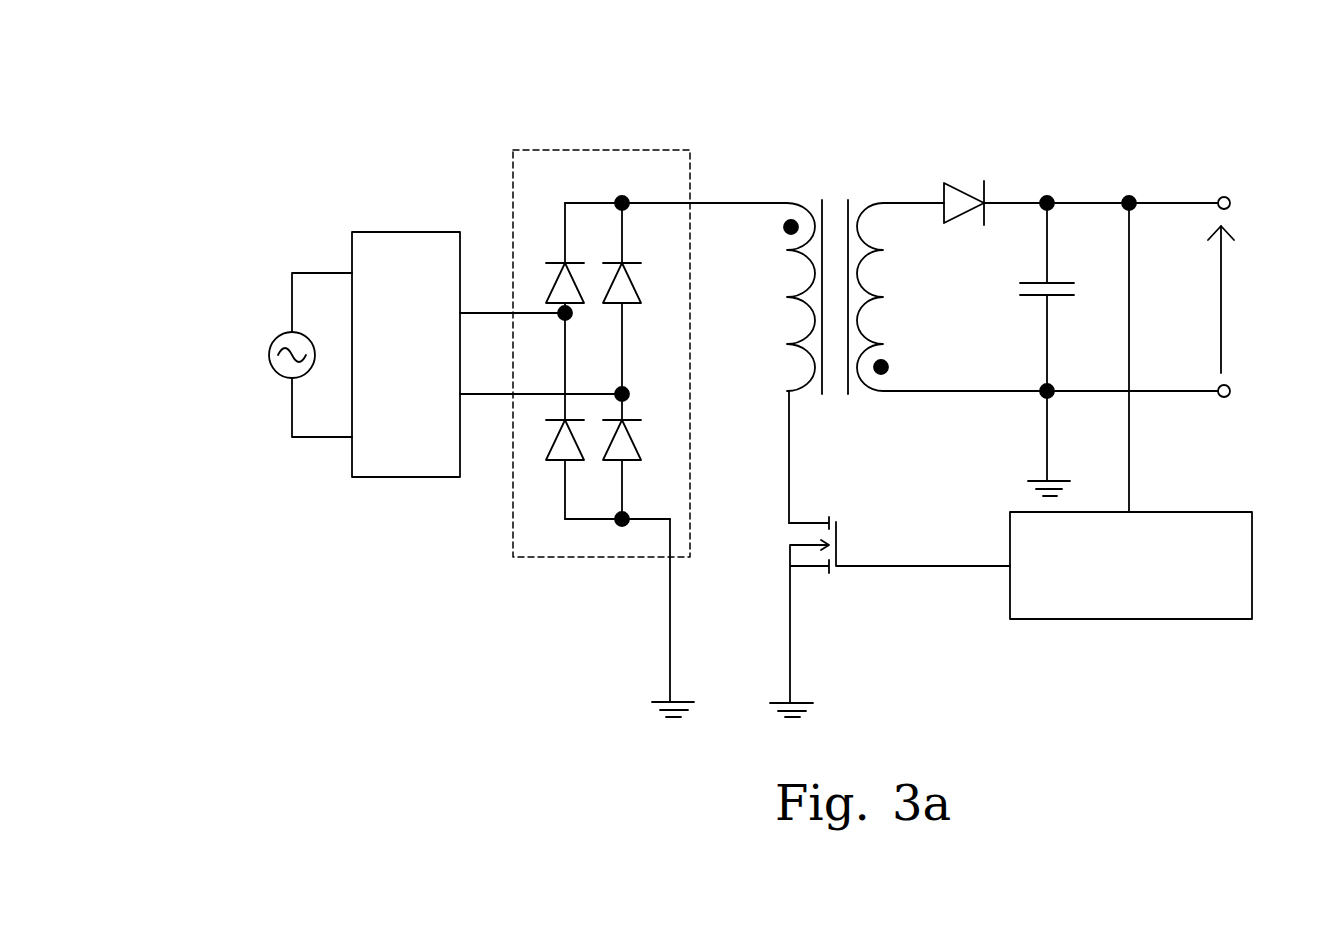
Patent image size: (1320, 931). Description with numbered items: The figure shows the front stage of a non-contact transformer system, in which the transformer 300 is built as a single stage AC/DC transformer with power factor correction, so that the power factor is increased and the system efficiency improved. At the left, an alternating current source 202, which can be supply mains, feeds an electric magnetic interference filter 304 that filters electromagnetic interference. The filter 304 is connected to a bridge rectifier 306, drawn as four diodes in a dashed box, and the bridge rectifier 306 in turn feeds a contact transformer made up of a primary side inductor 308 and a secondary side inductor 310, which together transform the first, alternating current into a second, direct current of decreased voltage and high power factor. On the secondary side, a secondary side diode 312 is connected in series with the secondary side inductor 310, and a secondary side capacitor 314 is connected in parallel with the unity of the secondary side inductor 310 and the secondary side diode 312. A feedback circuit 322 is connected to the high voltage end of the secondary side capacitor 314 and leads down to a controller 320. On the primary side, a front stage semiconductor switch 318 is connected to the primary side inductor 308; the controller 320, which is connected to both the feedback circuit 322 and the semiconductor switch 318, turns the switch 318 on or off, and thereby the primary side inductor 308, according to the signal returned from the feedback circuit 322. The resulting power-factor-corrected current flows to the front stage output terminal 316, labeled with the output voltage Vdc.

The transformer 300 is at (1214, 47).
The alternating current source 202 is at (275, 340).
The electric magnetic interference filter 304 is at (387, 232).
The bridge rectifier 306 is at (572, 150).
The primary side inductor 308 is at (795, 203).
The secondary side inductor 310 is at (870, 203).
The secondary side diode 312 is at (967, 185).
The secondary side capacitor 314 is at (1048, 282).
The front stage output terminal 316 is at (1230, 303).
The front stage semiconductor switch 318 is at (840, 547).
The controller 320 is at (1195, 507).
The feedback circuit 322 is at (1130, 468).